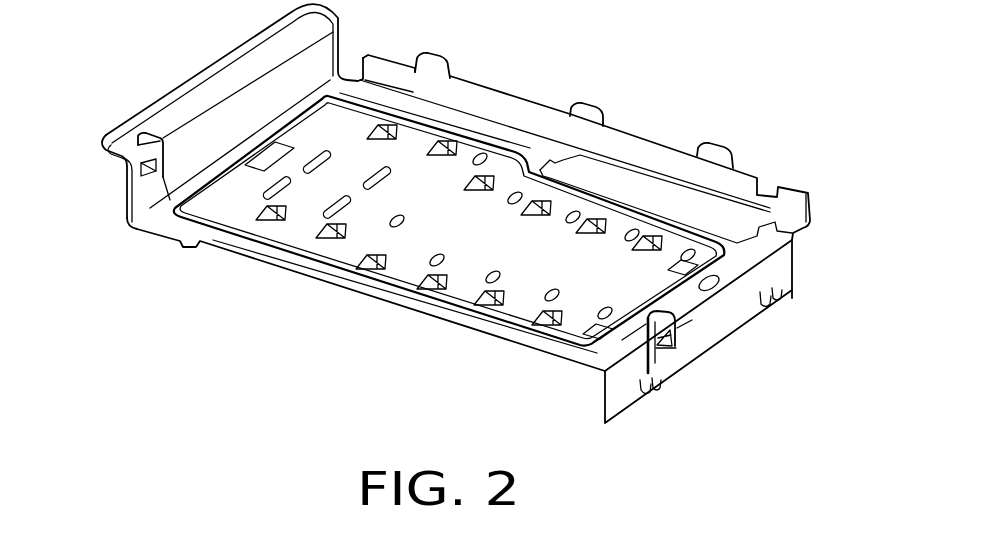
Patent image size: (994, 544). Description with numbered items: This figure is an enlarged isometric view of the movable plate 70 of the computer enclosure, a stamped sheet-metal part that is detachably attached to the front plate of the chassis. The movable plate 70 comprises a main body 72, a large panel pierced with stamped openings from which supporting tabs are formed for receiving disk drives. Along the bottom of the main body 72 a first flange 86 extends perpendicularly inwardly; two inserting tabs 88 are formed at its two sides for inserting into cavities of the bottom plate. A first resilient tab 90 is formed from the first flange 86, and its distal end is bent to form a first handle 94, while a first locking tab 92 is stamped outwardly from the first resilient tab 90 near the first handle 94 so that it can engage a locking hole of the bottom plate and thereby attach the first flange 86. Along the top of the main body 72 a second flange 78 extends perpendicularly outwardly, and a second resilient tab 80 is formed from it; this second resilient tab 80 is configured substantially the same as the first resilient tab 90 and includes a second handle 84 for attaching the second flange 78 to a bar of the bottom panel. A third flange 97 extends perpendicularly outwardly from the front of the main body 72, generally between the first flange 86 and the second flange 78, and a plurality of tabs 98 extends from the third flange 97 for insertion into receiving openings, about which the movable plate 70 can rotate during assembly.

The movable plate 70 is at (656, 134).
The main body 72 is at (427, 142).
The second flange 78 is at (323, 45).
The second resilient tab 80 is at (143, 185).
The second handle 84 is at (143, 134).
The first flange 86 is at (617, 403).
The inserting tabs 88 is at (650, 393).
The first resilient tab 90 is at (667, 360).
The first locking tab 92 is at (674, 338).
The first handle 94 is at (677, 320).
The third flange 97 is at (393, 77).
The tabs 98 is at (588, 108).